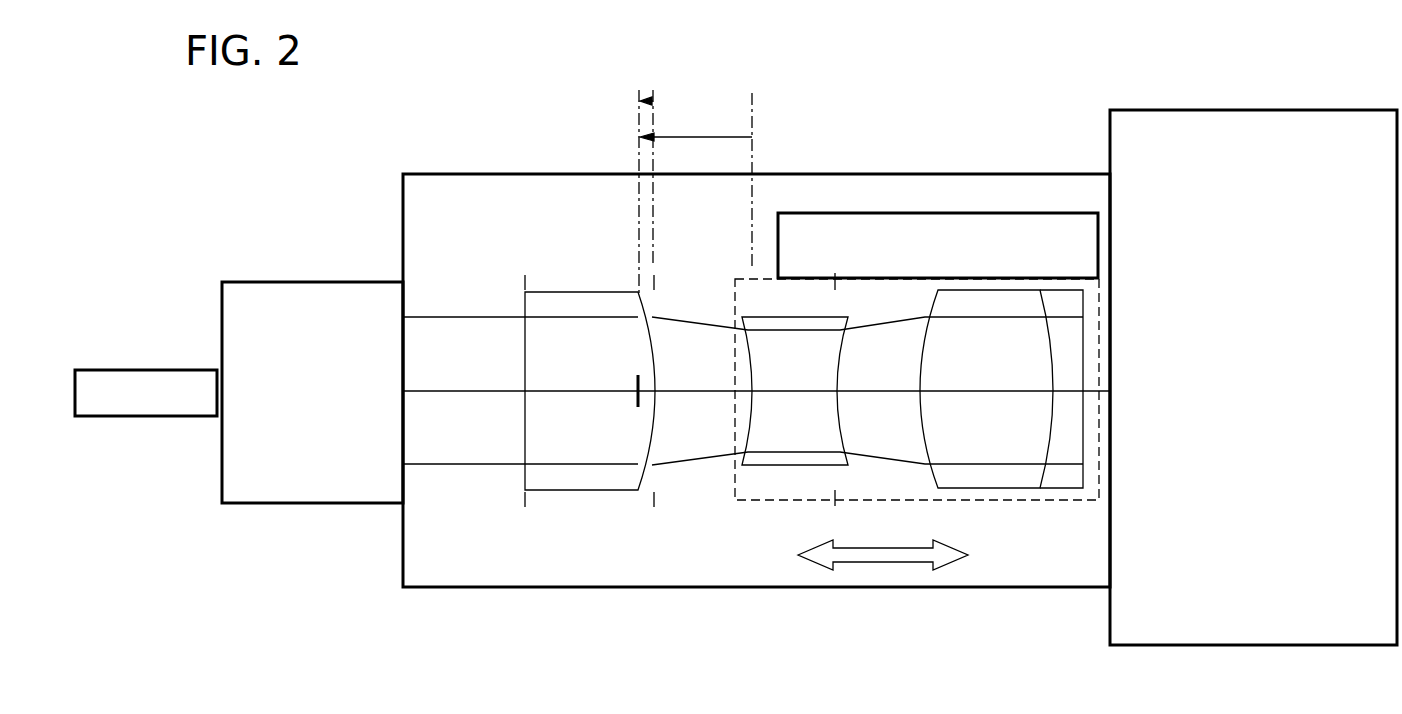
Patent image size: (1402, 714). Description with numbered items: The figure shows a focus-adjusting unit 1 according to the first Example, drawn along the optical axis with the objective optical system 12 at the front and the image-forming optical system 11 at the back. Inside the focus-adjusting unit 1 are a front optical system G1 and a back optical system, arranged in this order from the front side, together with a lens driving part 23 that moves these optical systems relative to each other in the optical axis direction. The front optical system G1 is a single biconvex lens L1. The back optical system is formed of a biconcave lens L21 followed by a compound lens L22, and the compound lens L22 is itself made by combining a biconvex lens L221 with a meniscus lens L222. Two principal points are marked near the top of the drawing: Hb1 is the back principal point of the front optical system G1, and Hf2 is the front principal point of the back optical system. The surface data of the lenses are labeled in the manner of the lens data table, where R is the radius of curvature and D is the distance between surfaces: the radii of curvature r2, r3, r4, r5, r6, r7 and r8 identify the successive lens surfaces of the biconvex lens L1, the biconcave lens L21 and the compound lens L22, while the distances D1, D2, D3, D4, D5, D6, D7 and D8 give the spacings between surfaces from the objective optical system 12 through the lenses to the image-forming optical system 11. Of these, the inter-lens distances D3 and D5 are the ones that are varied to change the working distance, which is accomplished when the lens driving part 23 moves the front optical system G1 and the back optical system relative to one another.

The focus-adjusting unit 1 is at (455, 173).
The image-forming optical system 11 is at (1256, 108).
The objective optical system 12 is at (322, 282).
The lens driving part 23 is at (863, 212).
The front optical system G1 is at (590, 428).
The biconvex lens L1 is at (580, 292).
The biconcave lens L21 is at (777, 470).
The compound lens L22 is at (1001, 351).
The biconvex lens L221 is at (985, 290).
The meniscus lens L222 is at (1060, 290).
The back principal point Hb1 is at (641, 92).
The front principal point Hf2 is at (696, 124).
The distance between surfaces D1 is at (463, 390).
The distance between surfaces D2 is at (568, 390).
The inter-lens distance D3 is at (693, 391).
The distance between surfaces D4 is at (797, 391).
The inter-lens distance D5 is at (886, 391).
The distance between surfaces D6 is at (980, 391).
The distance between surfaces D7 is at (1068, 391).
The distance between surfaces D8 is at (1095, 383).
The radius of curvature r2 is at (525, 428).
The radius of curvature r3 is at (651, 437).
The radius of curvature r4 is at (750, 412).
The radius of curvature r5 is at (838, 412).
The radius of curvature r6 is at (926, 473).
The radius of curvature r7 is at (1050, 440).
The radius of curvature r8 is at (1085, 423).